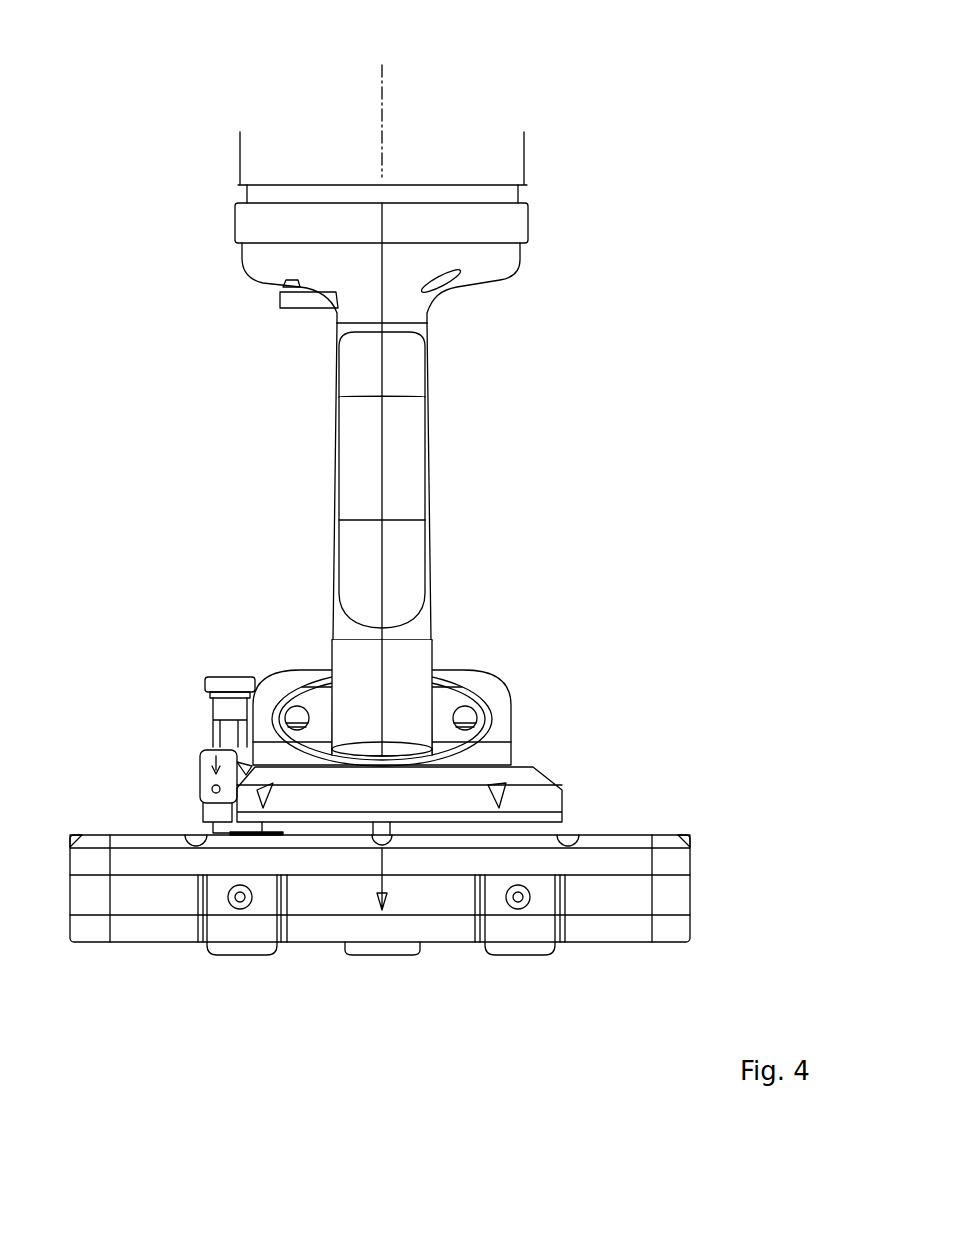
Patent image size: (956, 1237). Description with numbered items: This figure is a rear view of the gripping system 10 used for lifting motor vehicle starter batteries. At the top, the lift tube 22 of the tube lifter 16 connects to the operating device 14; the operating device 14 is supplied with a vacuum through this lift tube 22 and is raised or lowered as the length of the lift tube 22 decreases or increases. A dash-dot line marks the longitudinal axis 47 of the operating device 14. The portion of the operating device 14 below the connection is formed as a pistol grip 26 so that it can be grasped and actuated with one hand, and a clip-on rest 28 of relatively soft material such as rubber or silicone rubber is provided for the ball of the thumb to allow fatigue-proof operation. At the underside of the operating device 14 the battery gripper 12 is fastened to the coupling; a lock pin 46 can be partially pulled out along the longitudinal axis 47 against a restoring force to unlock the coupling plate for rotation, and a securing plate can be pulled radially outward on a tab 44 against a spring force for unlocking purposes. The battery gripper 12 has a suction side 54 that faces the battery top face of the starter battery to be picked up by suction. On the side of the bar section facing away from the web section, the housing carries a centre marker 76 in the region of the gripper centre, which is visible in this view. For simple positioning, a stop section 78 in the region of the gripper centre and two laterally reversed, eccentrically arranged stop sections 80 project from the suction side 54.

The gripping system 10 is at (620, 167).
The battery gripper 12 is at (405, 874).
The operating device 14 is at (423, 628).
The tube lifter 16 is at (245, 150).
The lift tube 22 is at (295, 187).
The pistol grip 26 is at (428, 573).
The rest 28 is at (407, 462).
The tab 44 is at (205, 765).
The lock pin 46 is at (205, 685).
The longitudinal axis 47 is at (382, 110).
The suction side 54 is at (648, 943).
The centre marker 76 is at (388, 872).
The stop section 78 is at (385, 952).
The stop sections 80 is at (247, 945).